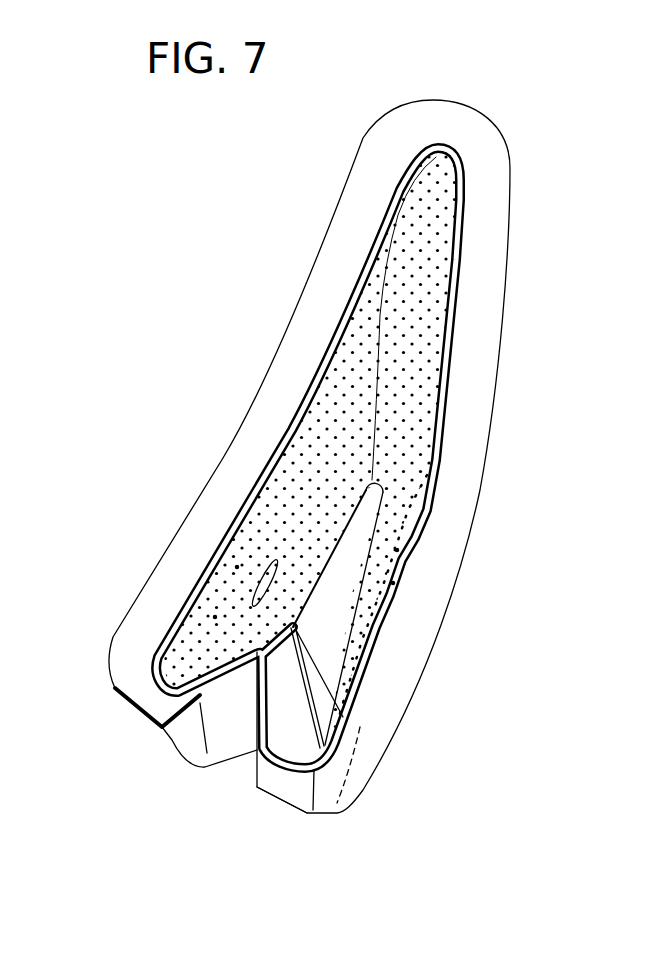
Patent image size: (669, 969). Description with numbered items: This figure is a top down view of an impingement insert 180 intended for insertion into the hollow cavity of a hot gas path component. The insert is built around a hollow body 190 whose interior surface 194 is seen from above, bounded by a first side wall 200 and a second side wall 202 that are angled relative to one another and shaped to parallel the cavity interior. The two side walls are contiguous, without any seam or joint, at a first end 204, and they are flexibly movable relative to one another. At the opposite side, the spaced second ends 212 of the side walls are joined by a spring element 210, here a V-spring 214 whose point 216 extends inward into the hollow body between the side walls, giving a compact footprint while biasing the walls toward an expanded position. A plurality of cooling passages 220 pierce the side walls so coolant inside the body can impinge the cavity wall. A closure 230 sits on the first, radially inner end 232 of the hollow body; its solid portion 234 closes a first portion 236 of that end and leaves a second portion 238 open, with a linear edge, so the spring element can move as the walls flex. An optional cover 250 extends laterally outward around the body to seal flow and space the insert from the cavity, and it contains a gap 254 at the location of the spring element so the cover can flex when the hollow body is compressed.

The impingement insert 180 is at (520, 98).
The interior surface 194 is at (435, 365).
The first end 204 is at (397, 190).
The cover 250 is at (494, 297).
The second side wall 202 is at (277, 483).
The first side wall 200 is at (403, 495).
The hollow body 190 is at (300, 448).
The second portion 238 is at (240, 550).
The cooling passages 220 is at (215, 617).
The first, radially inner end 232 is at (333, 553).
The closure 230 is at (353, 598).
The point 216 is at (280, 645).
The solid portion 234 is at (332, 675).
The first portion 236 is at (348, 765).
The V-spring 214 is at (233, 708).
The second end 212 is at (170, 657).
The spring element 210 is at (213, 793).
The gap 254 is at (247, 795).